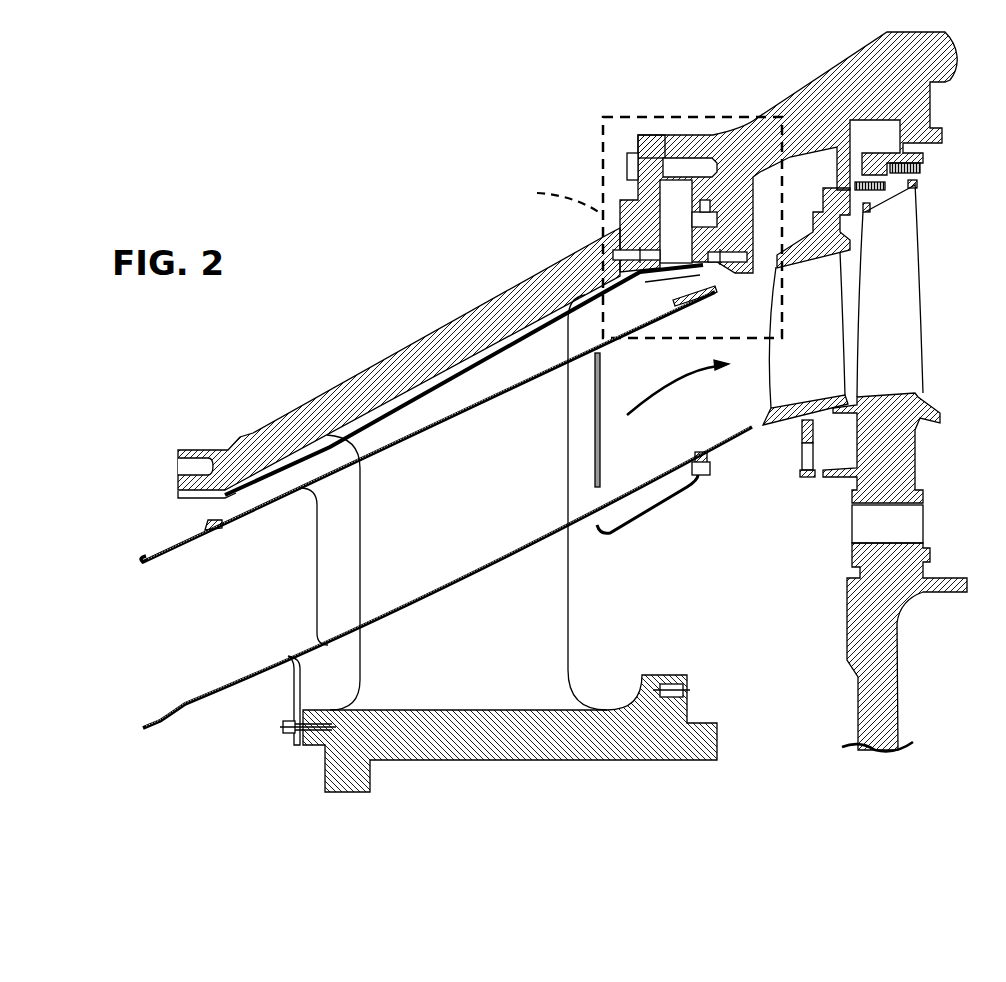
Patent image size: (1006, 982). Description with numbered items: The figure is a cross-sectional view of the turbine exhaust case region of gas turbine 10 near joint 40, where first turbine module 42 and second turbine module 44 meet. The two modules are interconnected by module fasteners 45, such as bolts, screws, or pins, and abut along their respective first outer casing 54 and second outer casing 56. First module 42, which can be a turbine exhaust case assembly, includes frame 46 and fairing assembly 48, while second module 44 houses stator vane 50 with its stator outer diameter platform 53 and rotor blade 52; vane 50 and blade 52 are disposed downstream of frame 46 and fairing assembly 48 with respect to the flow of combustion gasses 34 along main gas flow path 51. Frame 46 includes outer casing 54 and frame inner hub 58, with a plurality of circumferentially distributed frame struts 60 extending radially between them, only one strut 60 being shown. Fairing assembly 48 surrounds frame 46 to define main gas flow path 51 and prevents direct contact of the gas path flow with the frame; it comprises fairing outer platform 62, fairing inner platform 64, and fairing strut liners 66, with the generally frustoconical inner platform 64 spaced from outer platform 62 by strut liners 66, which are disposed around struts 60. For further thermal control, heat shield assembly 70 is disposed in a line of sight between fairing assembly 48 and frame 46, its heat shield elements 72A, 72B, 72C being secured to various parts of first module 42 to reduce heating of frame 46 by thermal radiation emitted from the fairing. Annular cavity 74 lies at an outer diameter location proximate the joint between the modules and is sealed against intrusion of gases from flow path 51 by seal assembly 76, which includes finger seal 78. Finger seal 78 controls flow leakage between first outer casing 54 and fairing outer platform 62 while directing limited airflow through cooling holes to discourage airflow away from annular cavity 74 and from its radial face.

The gas turbine 10 is at (428, 96).
The joint 40 is at (670, 125).
The second turbine module 44 is at (738, 150).
The module fasteners 45 is at (627, 160).
The seal assembly 76 is at (655, 240).
The annular cavity 74 is at (692, 248).
The stator outer diameter platform 53 is at (792, 232).
The second outer casing 56 is at (799, 133).
The first turbine module 42 is at (380, 270).
The frame 46 is at (332, 352).
The first outer casing 54 is at (246, 440).
The heat shield element 72A is at (623, 290).
The finger seal 78 is at (707, 282).
The stator vane 50 is at (797, 333).
The rotor blade 52 is at (879, 308).
The combustion gasses 34 is at (681, 379).
The main gas flow path 51 is at (689, 420).
The fairing outer platform 62 is at (197, 543).
The fairing strut liners 66 is at (316, 580).
The heat shield element 72B is at (580, 447).
The heat shield assembly 70 is at (690, 525).
The heat shield element 72C is at (636, 528).
The fairing inner platform 64 is at (215, 682).
The frame strut 60 is at (449, 660).
The fairing assembly 48 is at (262, 690).
The frame inner hub 58 is at (337, 763).